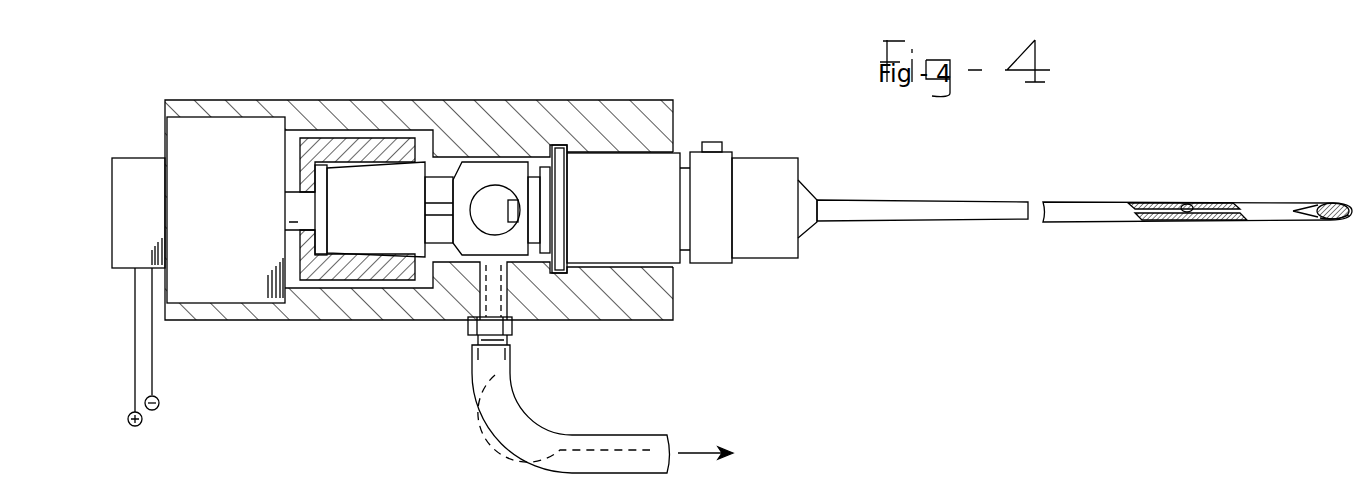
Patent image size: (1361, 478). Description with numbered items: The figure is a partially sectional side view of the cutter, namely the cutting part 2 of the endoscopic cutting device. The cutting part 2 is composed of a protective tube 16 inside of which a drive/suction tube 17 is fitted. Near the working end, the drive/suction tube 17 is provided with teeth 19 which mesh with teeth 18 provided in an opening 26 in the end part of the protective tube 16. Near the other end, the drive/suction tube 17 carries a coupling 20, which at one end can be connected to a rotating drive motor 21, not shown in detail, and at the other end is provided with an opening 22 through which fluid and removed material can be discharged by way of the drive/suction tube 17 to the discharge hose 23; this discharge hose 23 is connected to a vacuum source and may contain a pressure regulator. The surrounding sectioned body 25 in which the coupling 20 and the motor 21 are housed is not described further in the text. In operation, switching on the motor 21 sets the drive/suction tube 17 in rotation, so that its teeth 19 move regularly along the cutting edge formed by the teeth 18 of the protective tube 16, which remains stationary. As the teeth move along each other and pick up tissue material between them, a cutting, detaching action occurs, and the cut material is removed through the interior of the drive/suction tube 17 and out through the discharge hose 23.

The cutting part 2 is at (816, 298).
The protective tube 16 is at (883, 212).
The drive/suction tube 17 is at (1190, 205).
The teeth 18 is at (1335, 205).
The teeth 19 is at (1336, 228).
The coupling 20 is at (475, 168).
The rotating drive motor 21 is at (222, 141).
The opening 22 is at (493, 197).
The discharge hose 23 is at (595, 456).
The housing 25 is at (613, 125).
The opening 26 is at (1318, 225).